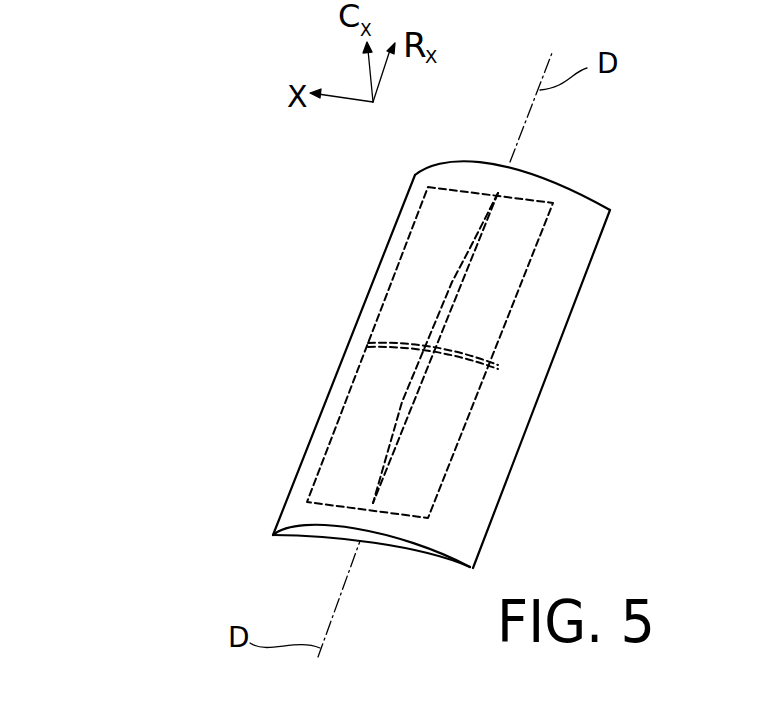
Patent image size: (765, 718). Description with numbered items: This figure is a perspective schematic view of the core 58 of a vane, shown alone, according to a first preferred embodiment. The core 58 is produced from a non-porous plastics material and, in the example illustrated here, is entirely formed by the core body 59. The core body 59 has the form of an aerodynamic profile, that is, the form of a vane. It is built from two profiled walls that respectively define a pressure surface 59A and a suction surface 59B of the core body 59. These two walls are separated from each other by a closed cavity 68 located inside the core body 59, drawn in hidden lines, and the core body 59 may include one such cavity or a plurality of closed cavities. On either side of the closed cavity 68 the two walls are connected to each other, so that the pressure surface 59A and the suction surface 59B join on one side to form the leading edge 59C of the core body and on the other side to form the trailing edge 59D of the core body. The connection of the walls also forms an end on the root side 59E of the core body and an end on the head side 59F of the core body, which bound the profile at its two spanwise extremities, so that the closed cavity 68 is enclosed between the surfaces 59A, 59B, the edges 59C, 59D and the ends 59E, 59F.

The core 58 is at (456, 359).
The core body 59 is at (456, 359).
The pressure surface 59A is at (423, 553).
The suction surface 59B is at (440, 550).
The leading edge 59C is at (565, 327).
The trailing edge 59D is at (334, 382).
The end on the root side 59E is at (332, 533).
The end on the head side 59F is at (478, 183).
The closed cavity 68 is at (393, 277).